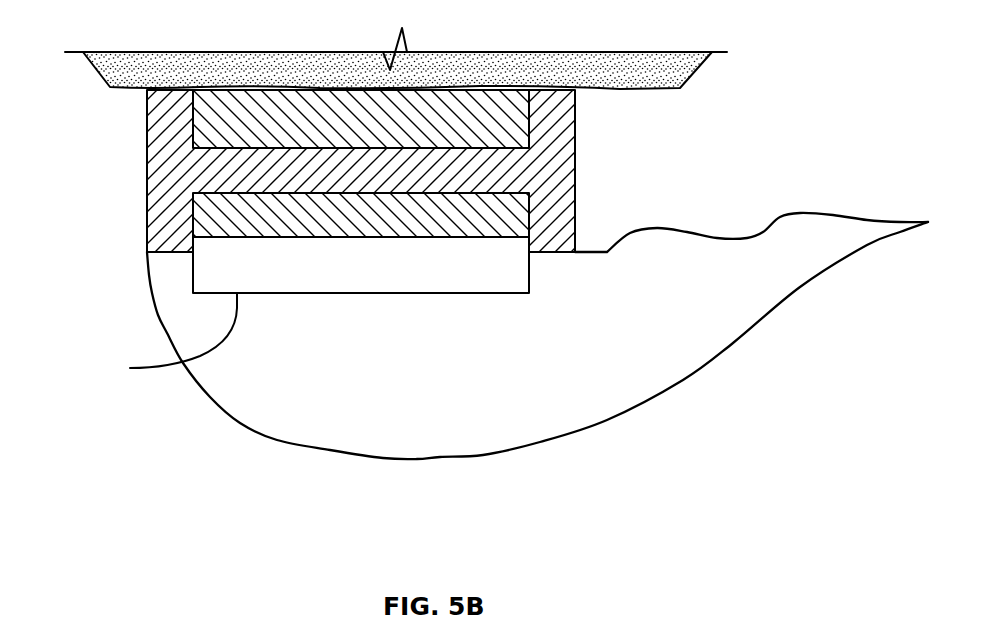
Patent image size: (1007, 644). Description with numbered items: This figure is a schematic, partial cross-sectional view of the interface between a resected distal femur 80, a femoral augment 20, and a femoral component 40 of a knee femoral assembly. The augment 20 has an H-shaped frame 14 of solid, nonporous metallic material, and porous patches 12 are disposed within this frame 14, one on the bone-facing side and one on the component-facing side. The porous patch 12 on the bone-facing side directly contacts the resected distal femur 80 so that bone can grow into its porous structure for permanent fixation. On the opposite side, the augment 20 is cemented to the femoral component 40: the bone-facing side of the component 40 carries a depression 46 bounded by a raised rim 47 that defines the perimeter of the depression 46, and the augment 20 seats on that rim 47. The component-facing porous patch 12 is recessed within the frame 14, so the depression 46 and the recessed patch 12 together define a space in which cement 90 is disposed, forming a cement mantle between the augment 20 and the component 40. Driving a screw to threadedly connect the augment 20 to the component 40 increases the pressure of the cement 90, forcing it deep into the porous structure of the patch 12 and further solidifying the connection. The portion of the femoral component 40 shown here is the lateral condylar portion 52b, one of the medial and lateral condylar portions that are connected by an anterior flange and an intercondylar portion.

The resected distal femur 80 is at (90, 65).
The femoral augment 20 is at (145, 156).
The structural frame 14 is at (147, 204).
The porous patches 12 is at (510, 114).
The cement 90 is at (512, 268).
The femoral component 40 is at (213, 411).
The raised rim 47 is at (148, 277).
The depressions 46 is at (163, 338).
The lateral condylar portion 52b is at (483, 455).